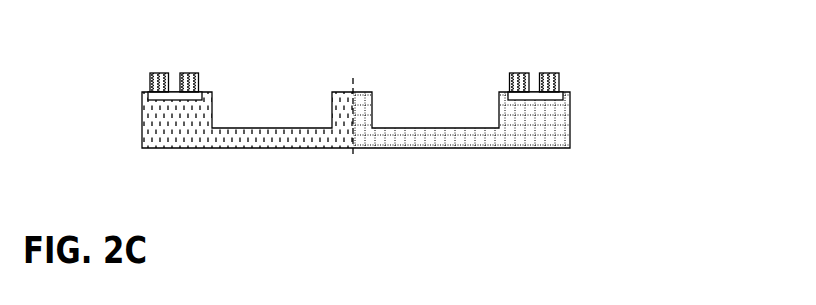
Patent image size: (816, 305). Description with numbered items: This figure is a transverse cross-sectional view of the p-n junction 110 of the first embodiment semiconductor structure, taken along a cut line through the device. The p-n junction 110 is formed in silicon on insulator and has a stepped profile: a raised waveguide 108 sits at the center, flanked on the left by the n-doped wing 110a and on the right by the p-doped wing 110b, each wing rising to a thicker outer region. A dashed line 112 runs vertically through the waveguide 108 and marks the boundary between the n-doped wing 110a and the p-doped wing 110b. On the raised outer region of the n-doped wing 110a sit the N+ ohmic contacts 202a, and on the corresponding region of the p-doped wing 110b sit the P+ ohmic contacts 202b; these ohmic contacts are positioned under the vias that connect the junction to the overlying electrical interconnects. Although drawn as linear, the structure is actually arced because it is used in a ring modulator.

The waveguide 108 is at (374, 63).
The p-n junction 110 is at (368, 240).
The n-doped wing 110a is at (352, 163).
The p-doped wing 110b is at (570, 163).
The dashed line 112 is at (350, 84).
The ohmic contacts (N+) 202a is at (173, 100).
The ohmic contacts (P+) 202b is at (537, 97).